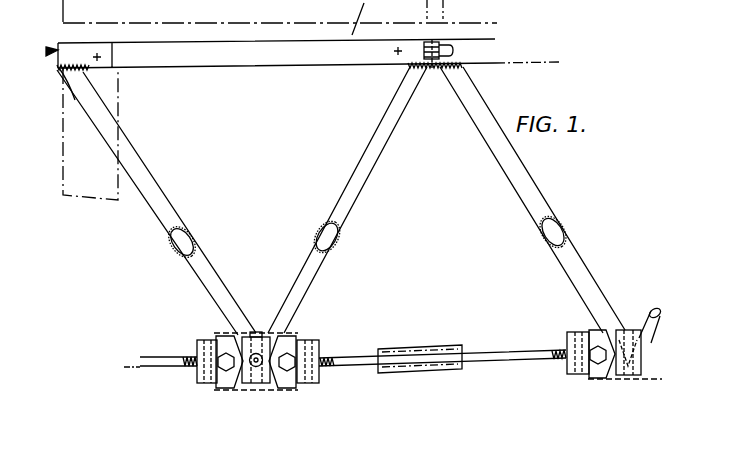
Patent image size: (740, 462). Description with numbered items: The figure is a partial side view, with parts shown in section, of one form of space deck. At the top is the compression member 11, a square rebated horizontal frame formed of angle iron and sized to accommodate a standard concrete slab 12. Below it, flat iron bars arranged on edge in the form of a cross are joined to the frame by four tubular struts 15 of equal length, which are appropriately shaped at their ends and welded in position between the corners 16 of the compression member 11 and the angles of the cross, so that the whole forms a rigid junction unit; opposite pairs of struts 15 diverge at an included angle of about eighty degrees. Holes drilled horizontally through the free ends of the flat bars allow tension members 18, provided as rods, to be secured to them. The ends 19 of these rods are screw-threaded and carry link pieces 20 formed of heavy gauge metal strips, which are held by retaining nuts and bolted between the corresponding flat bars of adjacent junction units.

The compression member 11 is at (271, 100).
The concrete slab 12 is at (309, 53).
The tubular struts 15 is at (146, 190).
The corners 16 is at (78, 100).
The tension members 18 is at (496, 353).
The ends 19 is at (328, 358).
The link pieces 20 is at (203, 340).